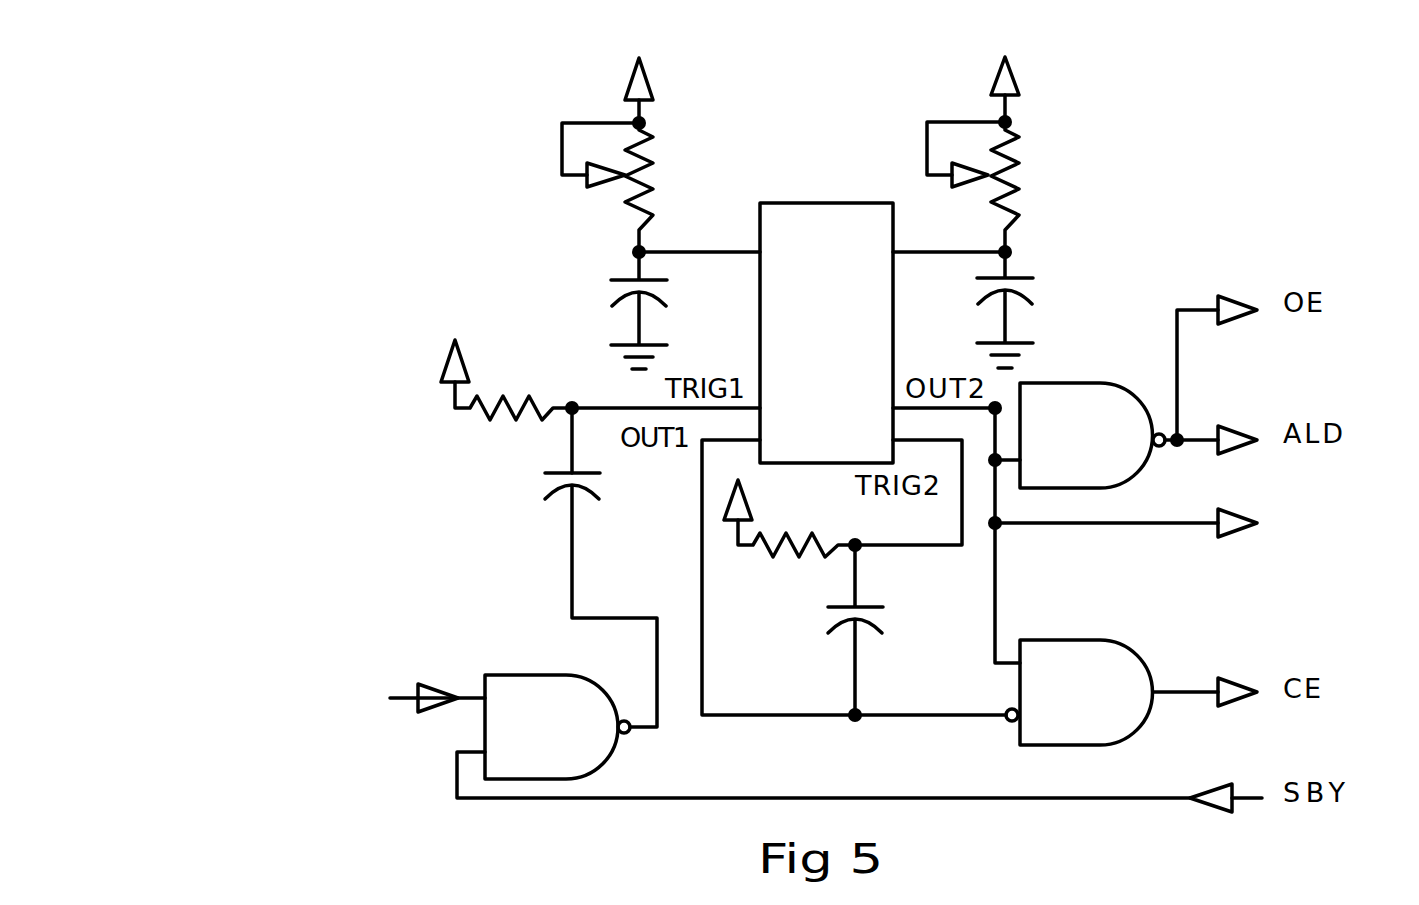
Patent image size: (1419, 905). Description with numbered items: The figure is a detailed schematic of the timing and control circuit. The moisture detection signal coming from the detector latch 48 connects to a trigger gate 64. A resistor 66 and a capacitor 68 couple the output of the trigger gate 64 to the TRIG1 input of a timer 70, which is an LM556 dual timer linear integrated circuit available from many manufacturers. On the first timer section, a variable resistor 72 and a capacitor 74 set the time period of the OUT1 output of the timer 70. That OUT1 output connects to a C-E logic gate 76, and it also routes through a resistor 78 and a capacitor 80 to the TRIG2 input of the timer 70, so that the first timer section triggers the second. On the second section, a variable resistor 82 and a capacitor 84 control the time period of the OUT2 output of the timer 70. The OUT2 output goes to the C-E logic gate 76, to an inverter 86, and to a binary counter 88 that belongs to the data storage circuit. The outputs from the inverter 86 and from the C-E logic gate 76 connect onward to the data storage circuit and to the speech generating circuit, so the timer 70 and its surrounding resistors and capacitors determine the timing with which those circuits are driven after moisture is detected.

The detector latch 48 is at (352, 718).
The trigger gate 64 is at (557, 667).
The resistor 66 is at (550, 400).
The capacitor 68 is at (607, 472).
The timer 70 is at (773, 197).
The variable resistor 72 is at (655, 196).
The capacitor 74 is at (672, 278).
The C-E logic gate 76 is at (1078, 625).
The resistor 78 is at (833, 540).
The capacitor 80 is at (887, 603).
The variable resistor 82 is at (1020, 193).
The capacitor 84 is at (975, 277).
The inverter 86 is at (1080, 378).
The binary counter 88 is at (1313, 537).